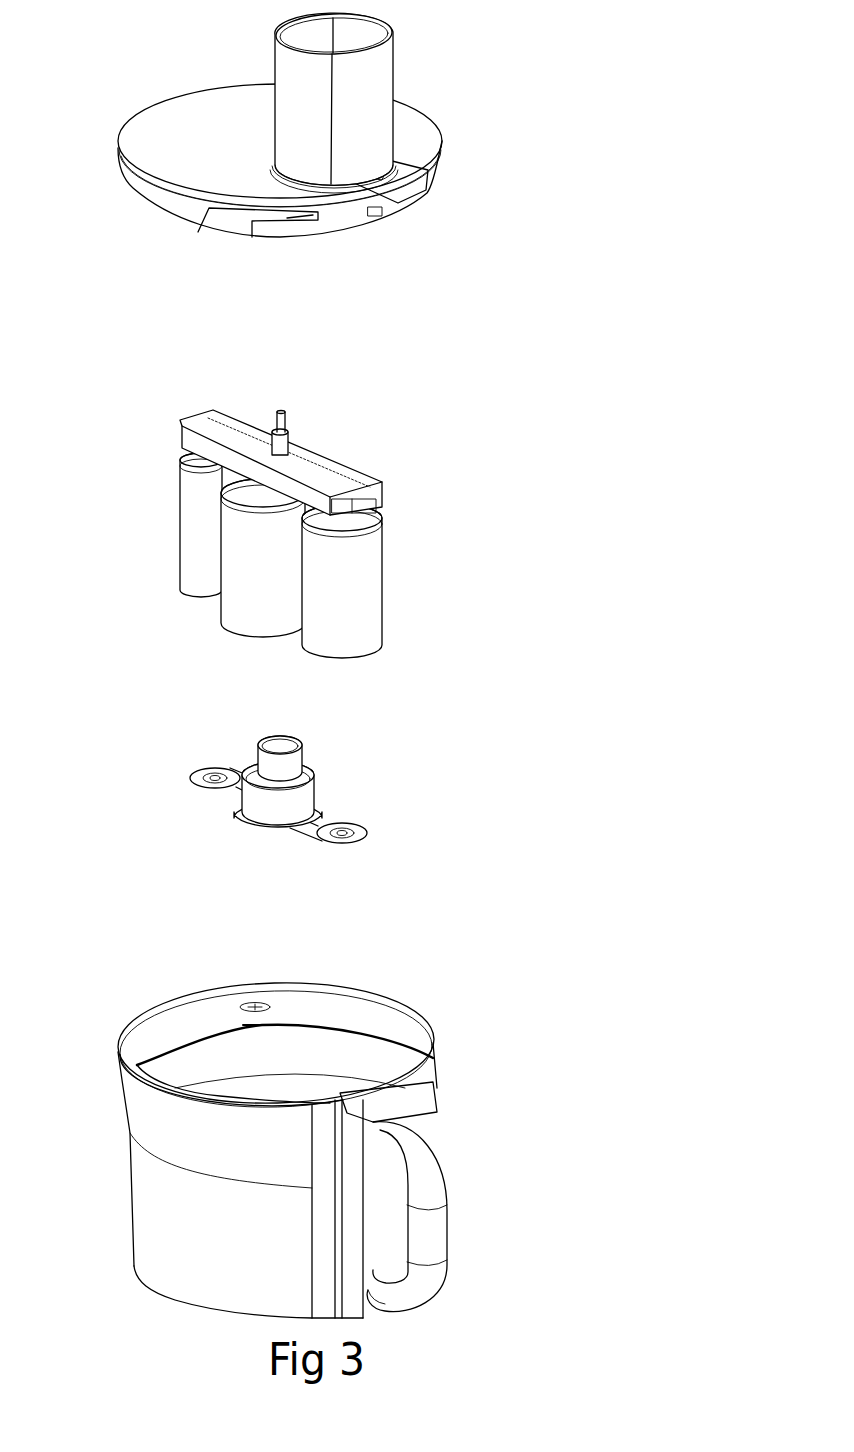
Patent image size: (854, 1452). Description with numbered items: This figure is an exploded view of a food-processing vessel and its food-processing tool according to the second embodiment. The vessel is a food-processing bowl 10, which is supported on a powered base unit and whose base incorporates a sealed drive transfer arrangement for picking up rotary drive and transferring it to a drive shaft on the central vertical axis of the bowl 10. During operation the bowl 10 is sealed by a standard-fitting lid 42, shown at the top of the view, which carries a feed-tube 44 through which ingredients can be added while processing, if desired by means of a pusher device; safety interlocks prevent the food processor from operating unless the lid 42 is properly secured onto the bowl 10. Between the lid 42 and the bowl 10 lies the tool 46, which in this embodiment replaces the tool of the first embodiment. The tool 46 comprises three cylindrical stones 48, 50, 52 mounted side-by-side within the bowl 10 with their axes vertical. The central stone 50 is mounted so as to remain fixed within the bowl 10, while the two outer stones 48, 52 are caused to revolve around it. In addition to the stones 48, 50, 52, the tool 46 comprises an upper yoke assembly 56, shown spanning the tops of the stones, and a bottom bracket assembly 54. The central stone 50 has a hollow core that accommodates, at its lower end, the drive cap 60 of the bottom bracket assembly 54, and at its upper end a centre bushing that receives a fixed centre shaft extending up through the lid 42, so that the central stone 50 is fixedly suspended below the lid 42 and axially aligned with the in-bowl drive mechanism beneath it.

The food-processing bowl 10 is at (157, 1212).
The lid 42 is at (201, 115).
The feed-tube 44 is at (370, 94).
The tool 46 is at (309, 530).
The cylindrical stone 48 is at (358, 574).
The central stone 50 is at (258, 578).
The cylindrical stone 52 is at (192, 538).
The bottom bracket assembly 54 is at (311, 779).
The upper yoke assembly 56 is at (313, 464).
The drive cap 60 is at (305, 763).